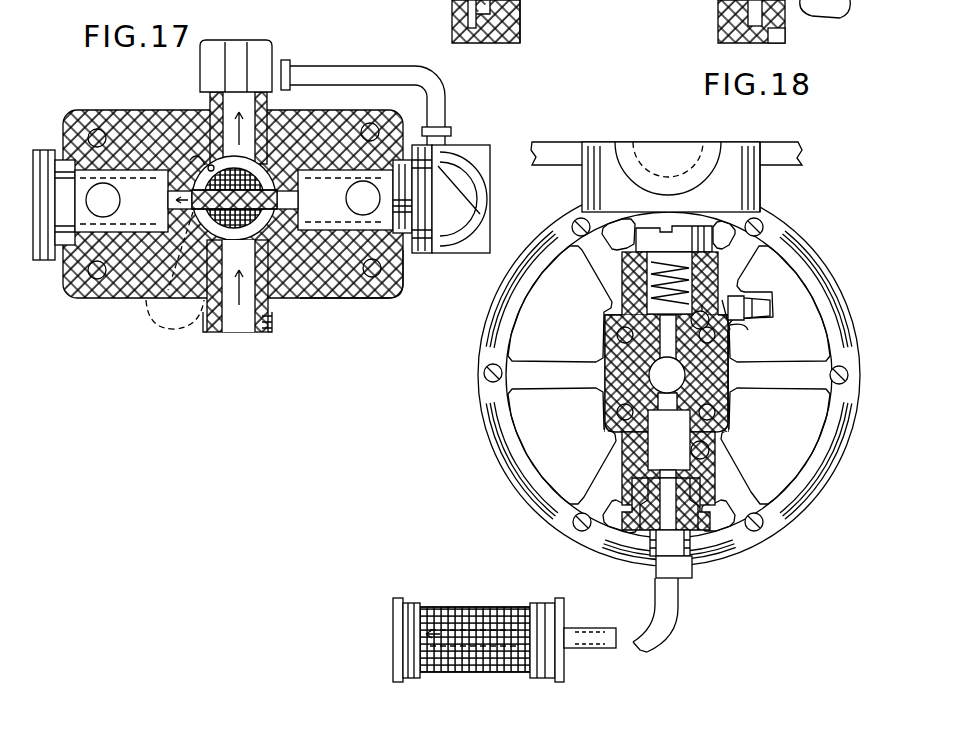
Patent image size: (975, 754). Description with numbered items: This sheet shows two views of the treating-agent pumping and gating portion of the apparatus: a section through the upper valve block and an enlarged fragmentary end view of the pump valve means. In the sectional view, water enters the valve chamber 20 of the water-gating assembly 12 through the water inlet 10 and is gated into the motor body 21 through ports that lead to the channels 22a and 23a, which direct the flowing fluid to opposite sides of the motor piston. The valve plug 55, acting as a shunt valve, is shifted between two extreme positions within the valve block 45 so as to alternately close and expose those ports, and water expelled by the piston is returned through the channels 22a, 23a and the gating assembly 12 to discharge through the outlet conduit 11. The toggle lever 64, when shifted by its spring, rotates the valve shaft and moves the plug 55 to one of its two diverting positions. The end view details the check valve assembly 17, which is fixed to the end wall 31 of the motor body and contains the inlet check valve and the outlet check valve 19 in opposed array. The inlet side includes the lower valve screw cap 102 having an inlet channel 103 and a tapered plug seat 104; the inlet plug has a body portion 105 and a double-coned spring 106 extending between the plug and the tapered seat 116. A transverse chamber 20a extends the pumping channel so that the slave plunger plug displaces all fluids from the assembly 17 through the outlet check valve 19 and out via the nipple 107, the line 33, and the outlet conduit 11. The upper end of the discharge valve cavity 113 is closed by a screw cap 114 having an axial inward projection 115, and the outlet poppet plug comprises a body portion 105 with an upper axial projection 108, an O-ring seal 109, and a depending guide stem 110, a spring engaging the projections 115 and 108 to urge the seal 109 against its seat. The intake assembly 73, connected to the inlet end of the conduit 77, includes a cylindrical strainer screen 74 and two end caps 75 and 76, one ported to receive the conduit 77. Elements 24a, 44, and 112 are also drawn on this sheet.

In FIG. 17, the water inlet 10 is at (270, 312).
In FIG. 18, the water inlet 10 is at (560, 166).
In FIG. 17, the water outlet conduit 11 is at (270, 62).
In FIG. 18, the water outlet conduit 11 is at (786, 142).
In FIG. 17, the water-gating assembly 12 is at (113, 100).
In FIG. 17, the treating agent valve chamber means 17 is at (450, 258).
In FIG. 18, the treating agent valve chamber means 17 is at (738, 412).
In FIG. 18, the outlet check valve 19 is at (607, 285).
In FIG. 17, the valve chamber 20 is at (200, 128).
In FIG. 18, the transverse chamber 20a is at (650, 385).
In FIG. 18, the motor body 21 is at (608, 0).
In FIG. 17, the channel 22a is at (112, 207).
In FIG. 17, the channel 23a is at (350, 208).
In FIG. 18, the block 24a is at (540, 0).
In FIG. 18, the end wall 31 is at (812, 258).
In FIG. 17, the outlet channel 33 is at (352, 78).
In FIG. 17, the valve stem 44 is at (268, 228).
In FIG. 17, the manifold block 45 is at (354, 298).
In FIG. 18, the manifold block 45 is at (762, 190).
In FIG. 17, the valve plug 55 is at (179, 153).
In FIG. 17, the toggle lever 64 is at (150, 306).
In FIG. 18, the intake assembly 73 is at (455, 672).
In FIG. 18, the cylindrical strainer screen 74 is at (476, 603).
In FIG. 18, the end plate 75 is at (394, 666).
In FIG. 18, the end cap 76 is at (560, 660).
In FIG. 18, the conduit 77 is at (652, 610).
In FIG. 18, the lower valve screw cap 102 is at (700, 560).
In FIG. 18, the inlet channel 103 is at (650, 546).
In FIG. 18, the tapered plug seat 104 is at (640, 485).
In FIG. 18, the body portion 105 is at (720, 340).
In FIG. 18, the double-coned spring 106 is at (705, 443).
In FIG. 18, the nipple 107 is at (755, 327).
In FIG. 18, the upper axial projection 108 is at (612, 318).
In FIG. 18, the O-ring seal 109 is at (730, 358).
In FIG. 18, the depending guide stem 110 is at (615, 348).
In FIG. 18, the fitting 112 is at (720, 300).
In FIG. 18, the discharge valve cavity 113 is at (628, 270).
In FIG. 18, the screw cap 114 is at (682, 238).
In FIG. 18, the axial inward projection 115 is at (674, 239).
In FIG. 18, the tapered seat 116 is at (625, 440).